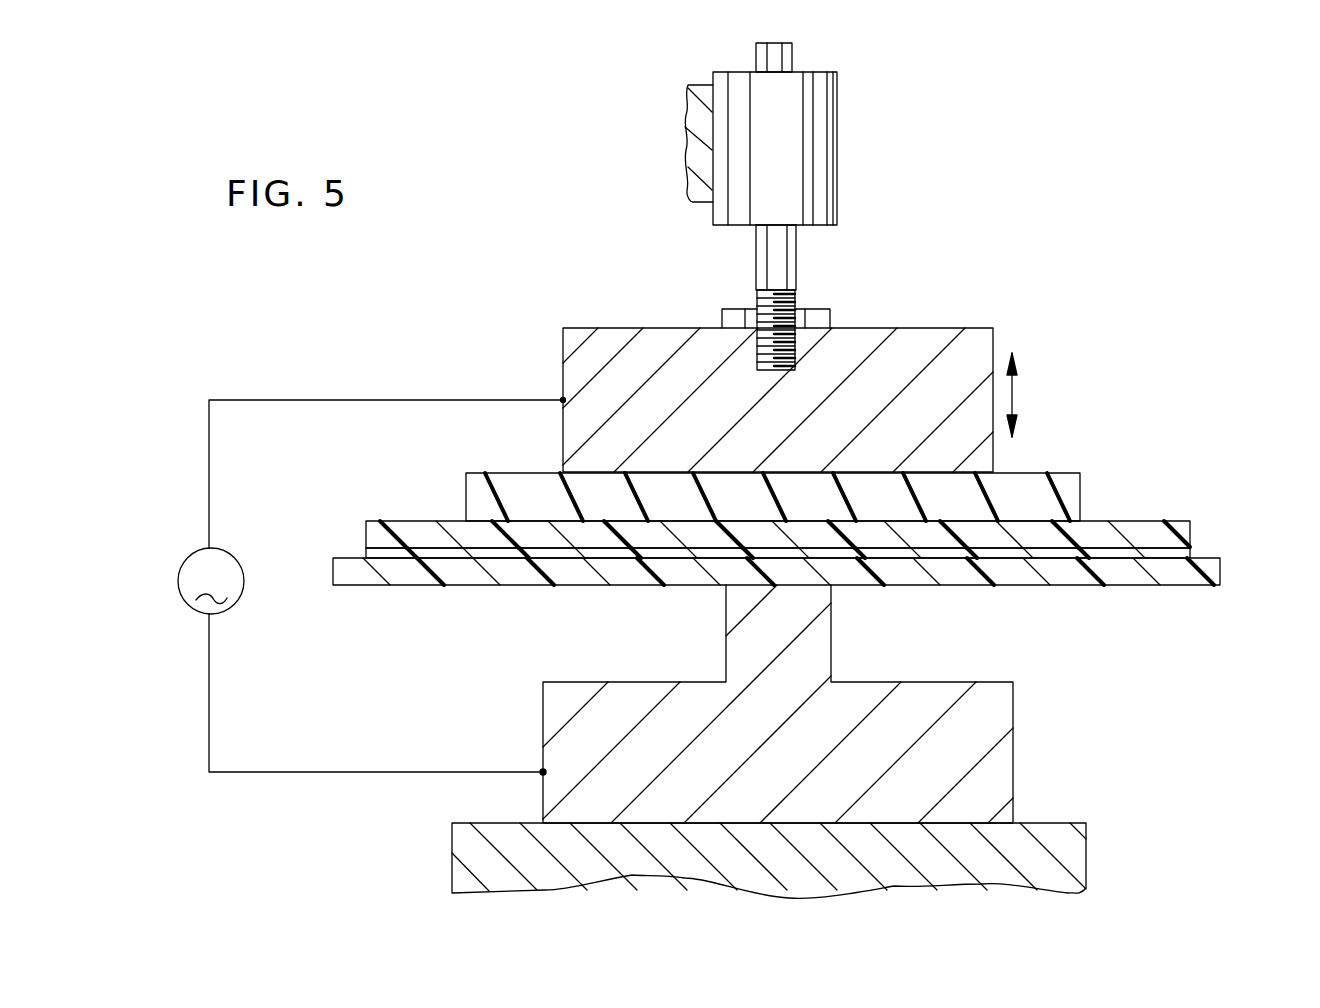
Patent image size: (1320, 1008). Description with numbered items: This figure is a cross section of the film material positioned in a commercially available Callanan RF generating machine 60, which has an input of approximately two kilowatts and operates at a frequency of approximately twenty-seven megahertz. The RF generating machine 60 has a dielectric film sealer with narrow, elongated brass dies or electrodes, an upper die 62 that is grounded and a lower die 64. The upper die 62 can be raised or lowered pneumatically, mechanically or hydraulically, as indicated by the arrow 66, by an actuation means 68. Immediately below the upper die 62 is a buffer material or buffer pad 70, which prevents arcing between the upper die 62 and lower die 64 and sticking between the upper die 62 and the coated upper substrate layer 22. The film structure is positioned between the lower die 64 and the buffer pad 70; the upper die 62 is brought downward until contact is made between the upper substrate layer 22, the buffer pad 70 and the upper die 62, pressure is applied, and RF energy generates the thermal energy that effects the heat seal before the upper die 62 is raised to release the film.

The RF generating machine 60 is at (1180, 282).
The upper die 62 is at (938, 328).
The lower die 64 is at (1220, 572).
The arrow 66 is at (1016, 395).
The actuation means 68 is at (852, 168).
The buffer pad 70 is at (1082, 492).
The upper substrate layer 22 is at (1190, 519).